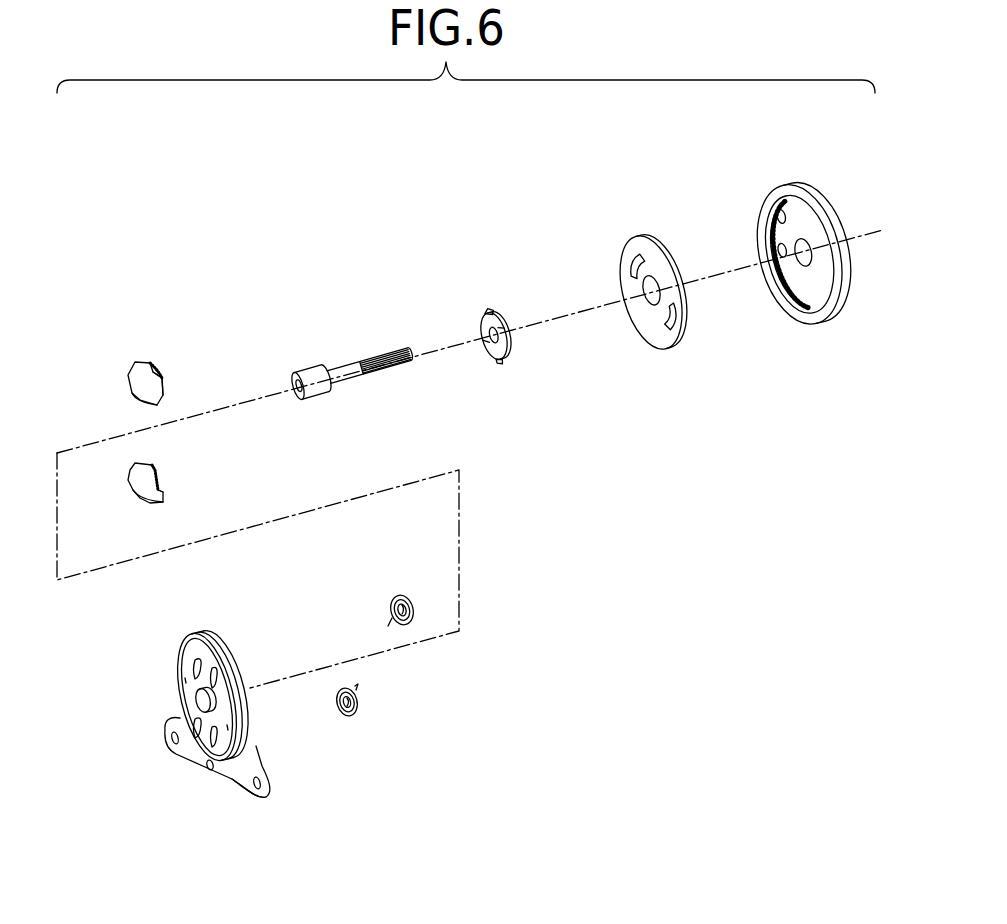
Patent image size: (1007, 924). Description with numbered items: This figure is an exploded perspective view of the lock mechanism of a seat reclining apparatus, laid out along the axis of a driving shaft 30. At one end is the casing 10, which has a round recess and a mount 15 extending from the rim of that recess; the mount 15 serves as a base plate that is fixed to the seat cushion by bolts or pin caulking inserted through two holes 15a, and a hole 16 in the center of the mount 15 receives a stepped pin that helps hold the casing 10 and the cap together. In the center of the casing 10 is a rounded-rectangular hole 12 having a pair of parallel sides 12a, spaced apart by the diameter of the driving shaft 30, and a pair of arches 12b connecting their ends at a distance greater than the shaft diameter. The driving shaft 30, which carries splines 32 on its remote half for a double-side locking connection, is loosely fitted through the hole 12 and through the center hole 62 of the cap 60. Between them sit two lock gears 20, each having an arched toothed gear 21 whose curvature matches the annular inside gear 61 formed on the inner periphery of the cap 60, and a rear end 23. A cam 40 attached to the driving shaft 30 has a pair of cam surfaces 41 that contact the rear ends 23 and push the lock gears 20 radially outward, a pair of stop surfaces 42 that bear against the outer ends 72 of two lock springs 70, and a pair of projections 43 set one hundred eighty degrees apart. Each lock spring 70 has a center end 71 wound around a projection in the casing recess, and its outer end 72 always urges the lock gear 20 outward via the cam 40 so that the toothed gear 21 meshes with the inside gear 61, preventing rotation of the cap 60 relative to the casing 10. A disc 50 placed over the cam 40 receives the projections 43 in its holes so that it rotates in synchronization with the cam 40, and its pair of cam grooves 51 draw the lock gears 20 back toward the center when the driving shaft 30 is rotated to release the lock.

The casing 10 is at (181, 634).
The hole 12 is at (196, 699).
The parallel sides 12a is at (200, 704).
The arches 12b is at (208, 690).
The mount 15 is at (238, 775).
The holes 15a is at (166, 747).
The hole 16 is at (210, 772).
The lock gear 20 is at (127, 378).
The toothed gear 21 is at (148, 365).
The rear end 23 is at (140, 402).
The driving shaft 30 is at (332, 367).
The splines 32 is at (383, 352).
The cam 40 is at (486, 318).
The cam surfaces 41 is at (497, 311).
The stop surfaces 42 is at (507, 338).
The projections 43 is at (503, 316).
The disc 50 is at (632, 232).
The cam grooves 51 is at (650, 260).
The cap 60 is at (765, 190).
The inside gear 61 is at (785, 303).
The hole 62 is at (804, 240).
The lock spring 70 is at (410, 597).
The center end 71 is at (396, 600).
The outer end 72 is at (388, 620).